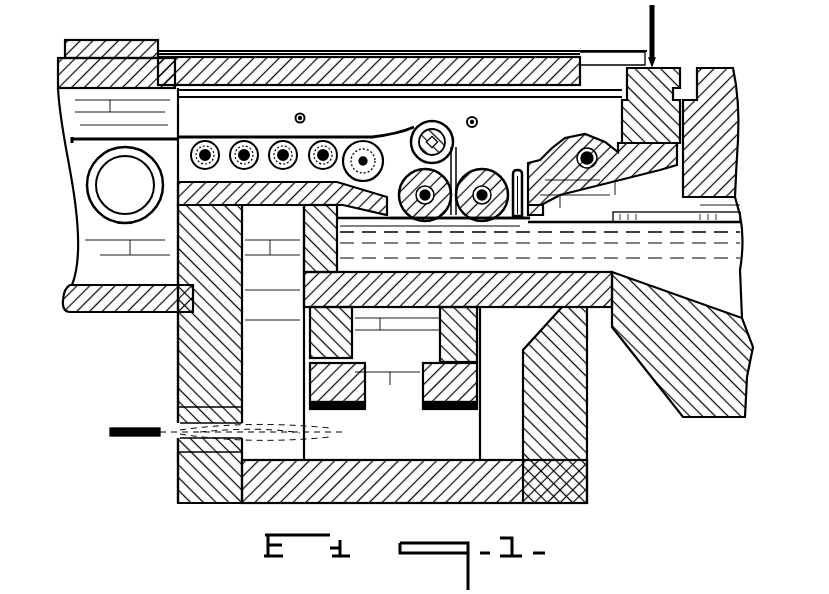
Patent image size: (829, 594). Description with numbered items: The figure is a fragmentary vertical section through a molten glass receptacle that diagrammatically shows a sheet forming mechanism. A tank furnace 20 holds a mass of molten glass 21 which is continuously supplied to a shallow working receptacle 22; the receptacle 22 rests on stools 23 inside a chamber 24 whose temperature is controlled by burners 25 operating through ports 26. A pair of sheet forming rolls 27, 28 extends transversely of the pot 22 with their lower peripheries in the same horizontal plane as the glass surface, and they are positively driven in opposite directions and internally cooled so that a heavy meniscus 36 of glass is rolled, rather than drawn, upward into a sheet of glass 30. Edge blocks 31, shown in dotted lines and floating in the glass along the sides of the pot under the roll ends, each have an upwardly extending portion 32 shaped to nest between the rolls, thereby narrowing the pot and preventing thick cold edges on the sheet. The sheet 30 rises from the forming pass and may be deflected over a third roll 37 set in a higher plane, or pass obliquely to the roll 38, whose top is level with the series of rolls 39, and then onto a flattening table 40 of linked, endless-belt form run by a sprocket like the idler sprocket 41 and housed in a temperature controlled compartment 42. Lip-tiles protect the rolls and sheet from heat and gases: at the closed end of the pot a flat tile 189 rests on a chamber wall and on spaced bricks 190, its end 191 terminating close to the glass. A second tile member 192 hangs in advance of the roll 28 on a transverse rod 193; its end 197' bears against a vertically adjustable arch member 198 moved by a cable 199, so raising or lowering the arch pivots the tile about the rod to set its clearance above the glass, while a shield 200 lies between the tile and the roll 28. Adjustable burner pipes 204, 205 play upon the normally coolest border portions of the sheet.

The tank furnace 20 is at (683, 392).
The mass of molten glass 21 is at (726, 258).
The working receptacle 22 is at (480, 300).
The stools 23 is at (440, 385).
The chamber 24 is at (460, 478).
The burners 25 is at (138, 437).
The ports 26 is at (235, 422).
The sheet forming roll 27 is at (410, 178).
The sheet forming roll 28 is at (514, 171).
The sheet of glass 30 is at (477, 122).
The edge blocks 31 is at (420, 245).
The upwardly extending portion 32 is at (485, 166).
The meniscus 36 is at (470, 222).
The third roll 37 is at (424, 120).
The roll 38 is at (345, 142).
The series of rolls 39 is at (213, 142).
The flattening table 40 is at (72, 139).
The idler sprocket 41 is at (95, 185).
The temperature controlled compartment 42 is at (96, 292).
The flat tile 189 is at (246, 205).
The bricks 190 is at (325, 210).
The end of the tile 191 is at (400, 225).
The second tile member 192 is at (560, 172).
The rod 193 is at (600, 142).
The end of the tile 197' is at (738, 132).
The arch member 198 is at (700, 112).
The cable 199 is at (648, 28).
The shield 200 is at (530, 210).
The burner pipe 204 is at (463, 115).
The burner pipe 205 is at (296, 116).